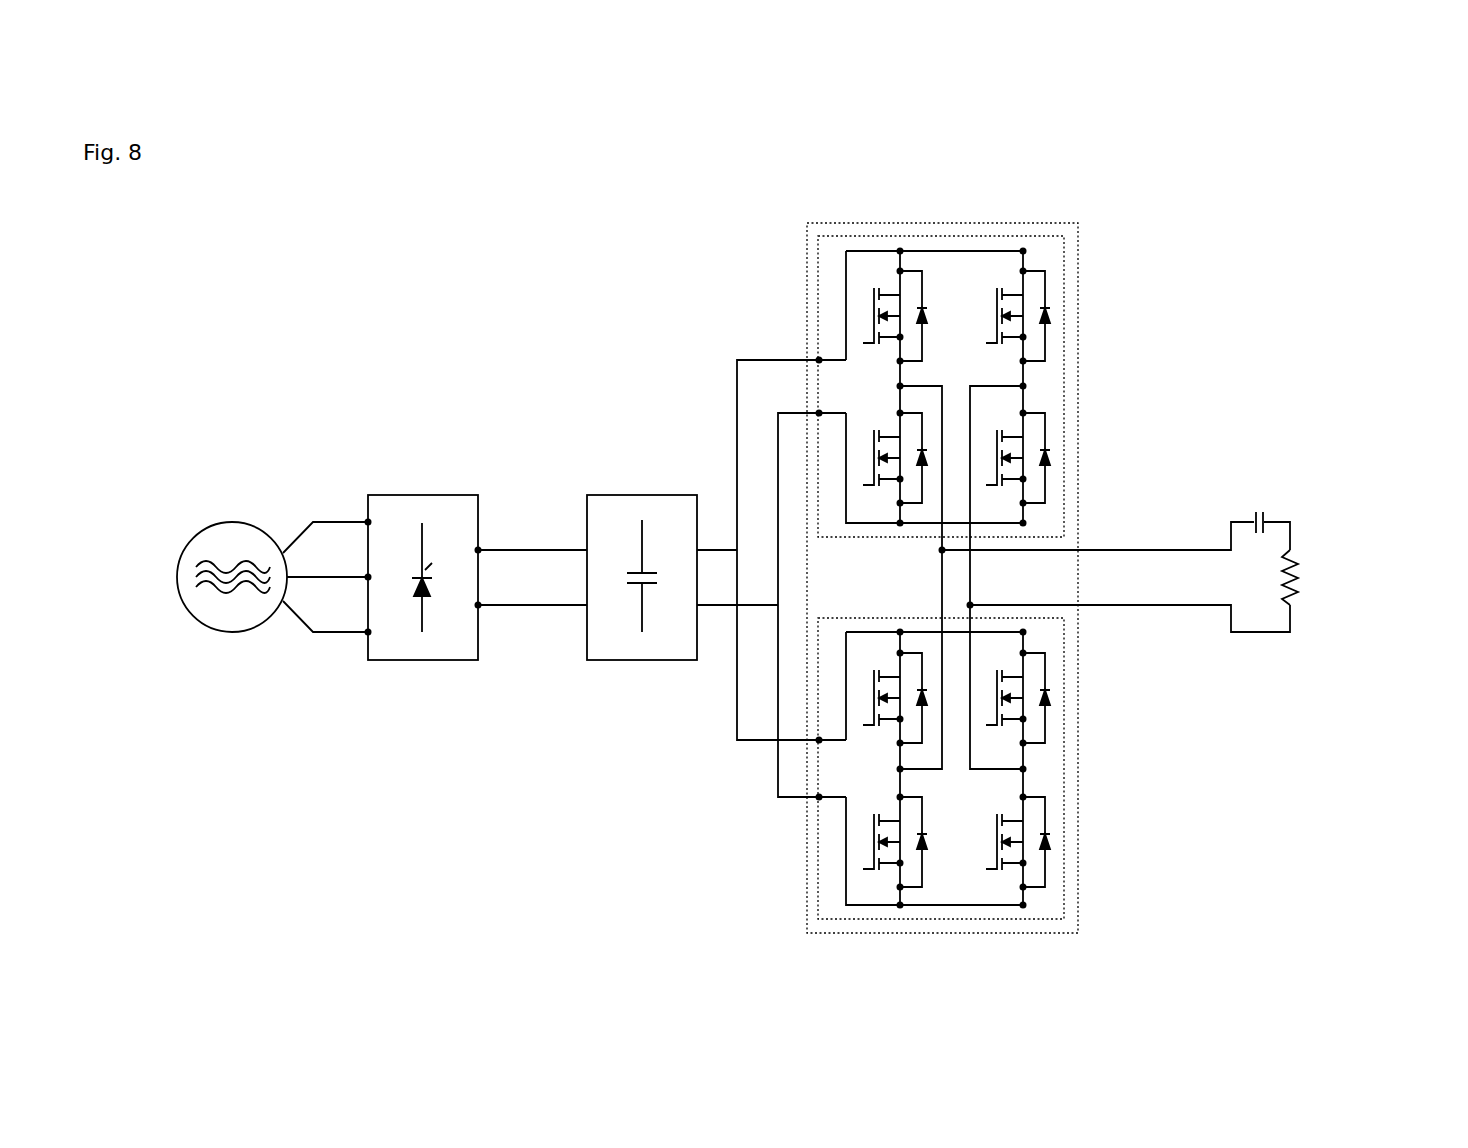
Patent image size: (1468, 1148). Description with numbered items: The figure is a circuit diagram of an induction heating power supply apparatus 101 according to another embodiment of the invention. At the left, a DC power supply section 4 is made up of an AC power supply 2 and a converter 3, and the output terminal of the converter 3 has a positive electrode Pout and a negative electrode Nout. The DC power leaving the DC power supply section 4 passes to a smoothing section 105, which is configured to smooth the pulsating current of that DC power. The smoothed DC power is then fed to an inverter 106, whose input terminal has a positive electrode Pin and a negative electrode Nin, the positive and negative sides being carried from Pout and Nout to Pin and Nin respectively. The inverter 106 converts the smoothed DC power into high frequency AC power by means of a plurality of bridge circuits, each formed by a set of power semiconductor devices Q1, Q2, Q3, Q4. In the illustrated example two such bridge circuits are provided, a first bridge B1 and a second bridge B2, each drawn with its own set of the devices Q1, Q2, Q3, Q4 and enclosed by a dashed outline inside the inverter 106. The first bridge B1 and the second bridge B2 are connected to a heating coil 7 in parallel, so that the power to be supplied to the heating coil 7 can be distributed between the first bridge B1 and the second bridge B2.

The induction heating power supply apparatus 101 is at (209, 262).
The AC power supply 2 is at (268, 615).
The converter 3 is at (418, 610).
The DC power supply section 4 is at (507, 735).
The smoothing section 105 is at (641, 616).
The inverter 106 is at (935, 611).
The heating coil 7 is at (1302, 578).
The first bridge B1 is at (1065, 378).
The second bridge B2 is at (1064, 778).
The power semiconductor device Q1 is at (894, 507).
The power semiconductor device Q2 is at (894, 650).
The power semiconductor device Q3 is at (1017, 507).
The power semiconductor device Q4 is at (1017, 650).
The positive electrode of inverter input terminal Pin is at (819, 360).
The negative electrode of inverter input terminal Nin is at (819, 413).
The positive electrode of converter output terminal Pout is at (478, 550).
The negative electrode of converter output terminal Nout is at (478, 605).